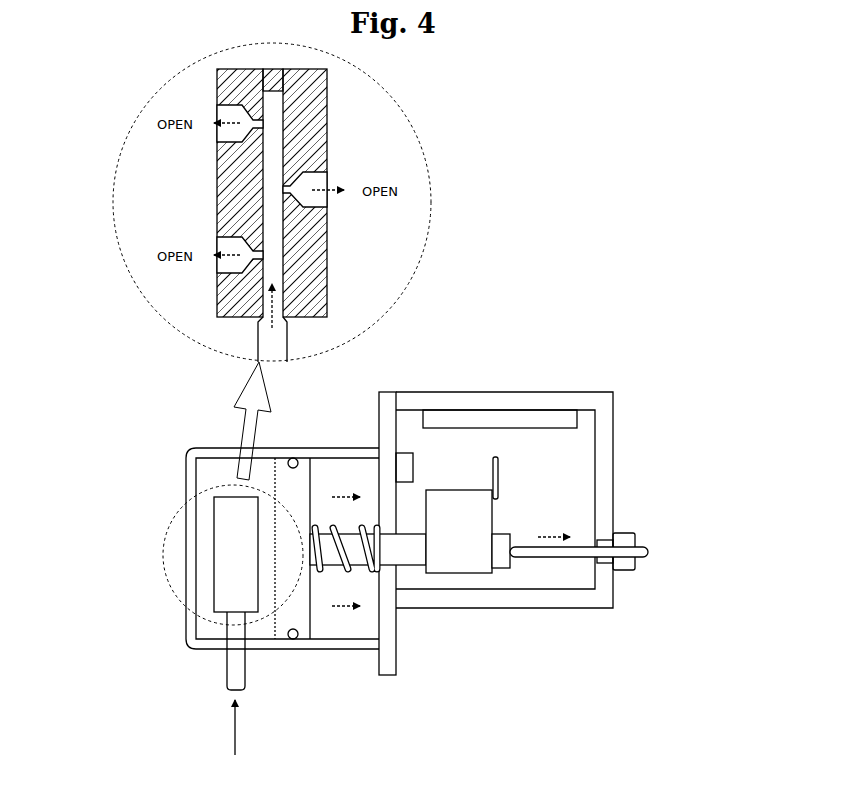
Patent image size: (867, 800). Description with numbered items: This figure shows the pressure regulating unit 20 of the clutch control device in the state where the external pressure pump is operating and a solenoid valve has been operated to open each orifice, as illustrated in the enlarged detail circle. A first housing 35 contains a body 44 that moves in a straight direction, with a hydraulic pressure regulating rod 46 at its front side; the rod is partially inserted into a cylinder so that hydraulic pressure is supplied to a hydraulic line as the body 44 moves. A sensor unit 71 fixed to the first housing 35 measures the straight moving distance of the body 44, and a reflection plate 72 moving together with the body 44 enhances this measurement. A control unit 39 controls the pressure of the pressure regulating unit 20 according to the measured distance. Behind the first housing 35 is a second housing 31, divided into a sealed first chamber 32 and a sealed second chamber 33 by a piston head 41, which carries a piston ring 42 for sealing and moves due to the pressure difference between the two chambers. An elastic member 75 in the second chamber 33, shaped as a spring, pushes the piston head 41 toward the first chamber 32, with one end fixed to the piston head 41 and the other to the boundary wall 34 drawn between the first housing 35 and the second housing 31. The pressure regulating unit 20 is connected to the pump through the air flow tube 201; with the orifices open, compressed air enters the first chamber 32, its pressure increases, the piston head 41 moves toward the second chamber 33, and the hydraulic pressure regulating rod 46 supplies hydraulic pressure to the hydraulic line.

The pressure regulating unit 20 is at (207, 545).
The second housing 31 is at (343, 448).
The first chamber 32 is at (207, 473).
The second chamber 33 is at (343, 632).
The partition plate 34 is at (390, 392).
The first housing 35 is at (510, 400).
The control unit 39 is at (548, 418).
The piston head 41 is at (303, 625).
The piston ring 42 is at (293, 640).
The body 44 is at (470, 572).
The hydraulic pressure regulating rod 46 is at (572, 552).
The sensor unit 71 is at (413, 467).
The reflection plate 72 is at (498, 476).
The elastic member 75 is at (367, 577).
The air flow tube 201 is at (232, 662).